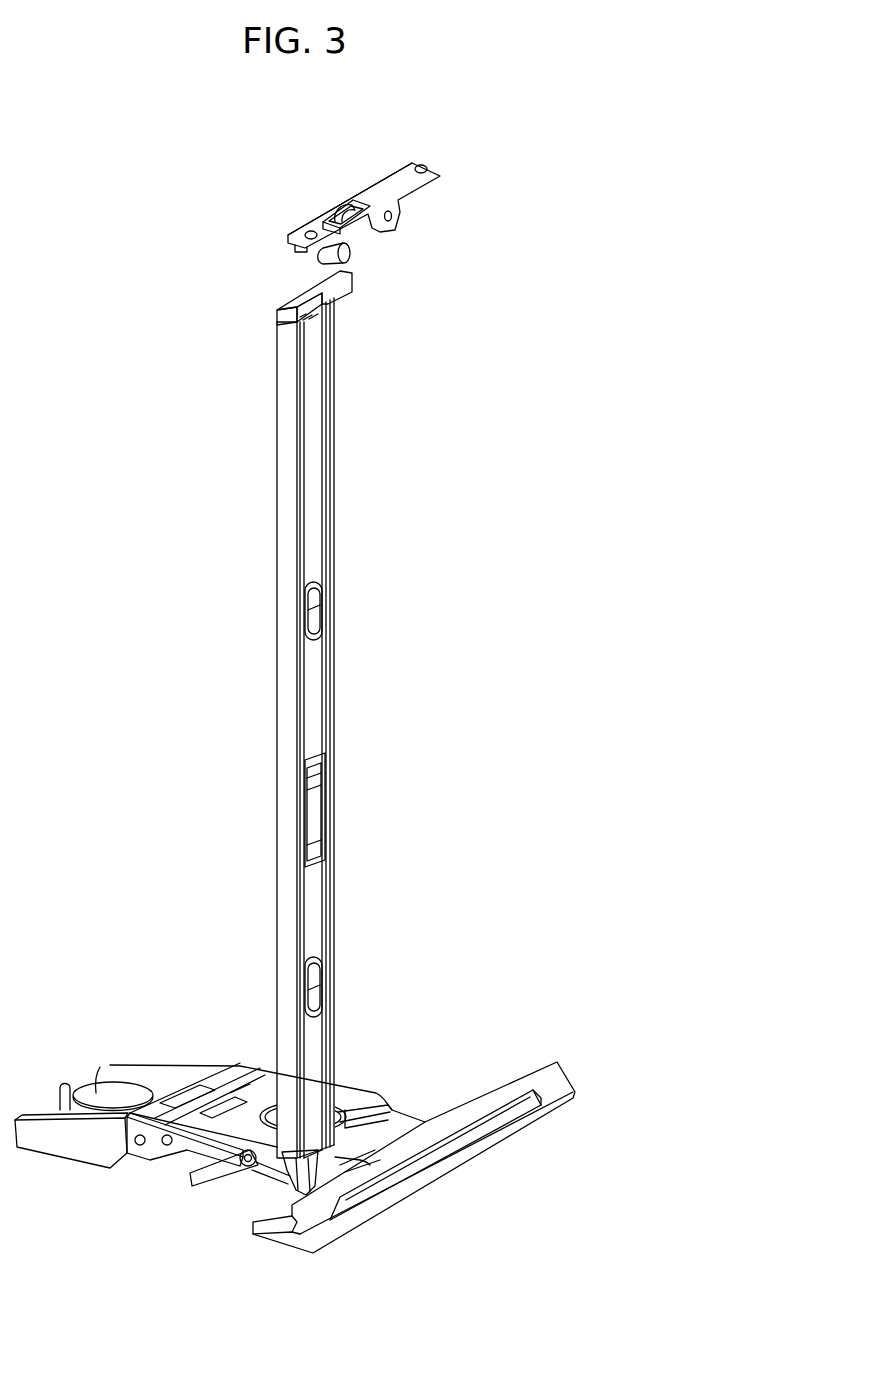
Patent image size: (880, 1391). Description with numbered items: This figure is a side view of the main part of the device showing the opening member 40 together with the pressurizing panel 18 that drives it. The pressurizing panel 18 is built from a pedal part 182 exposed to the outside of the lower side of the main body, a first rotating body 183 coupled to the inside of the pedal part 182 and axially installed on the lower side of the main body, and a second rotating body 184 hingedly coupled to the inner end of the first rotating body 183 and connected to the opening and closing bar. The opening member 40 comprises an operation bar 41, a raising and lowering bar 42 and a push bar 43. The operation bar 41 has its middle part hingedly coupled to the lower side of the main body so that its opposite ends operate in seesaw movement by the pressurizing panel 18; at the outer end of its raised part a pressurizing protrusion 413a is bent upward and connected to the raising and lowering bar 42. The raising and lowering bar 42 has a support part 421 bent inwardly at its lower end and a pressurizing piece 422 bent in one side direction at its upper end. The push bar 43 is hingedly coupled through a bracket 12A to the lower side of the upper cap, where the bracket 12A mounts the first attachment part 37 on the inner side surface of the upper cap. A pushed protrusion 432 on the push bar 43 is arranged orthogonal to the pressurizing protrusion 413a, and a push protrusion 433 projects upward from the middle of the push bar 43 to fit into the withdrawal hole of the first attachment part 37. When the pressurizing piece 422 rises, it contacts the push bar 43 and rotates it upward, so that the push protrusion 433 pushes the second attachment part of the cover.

The opening member 40 is at (54, 191).
The pressurizing panel 18 is at (228, 1046).
The pedal part 182 is at (485, 1128).
The first rotating body 183 is at (190, 1145).
The second rotating body 184 is at (62, 1140).
The operation bar 41 is at (226, 1188).
The raising and lowering bar 42 is at (285, 510).
The support part 421 is at (252, 1168).
The pressurizing piece 422 is at (346, 279).
The push bar 43 is at (402, 252).
The bracket 12A is at (407, 180).
The pushed protrusion 432 is at (330, 255).
The push protrusion 433 is at (340, 206).
The first attachment part 37 is at (342, 217).
The pressurizing protrusion 413a is at (340, 1203).